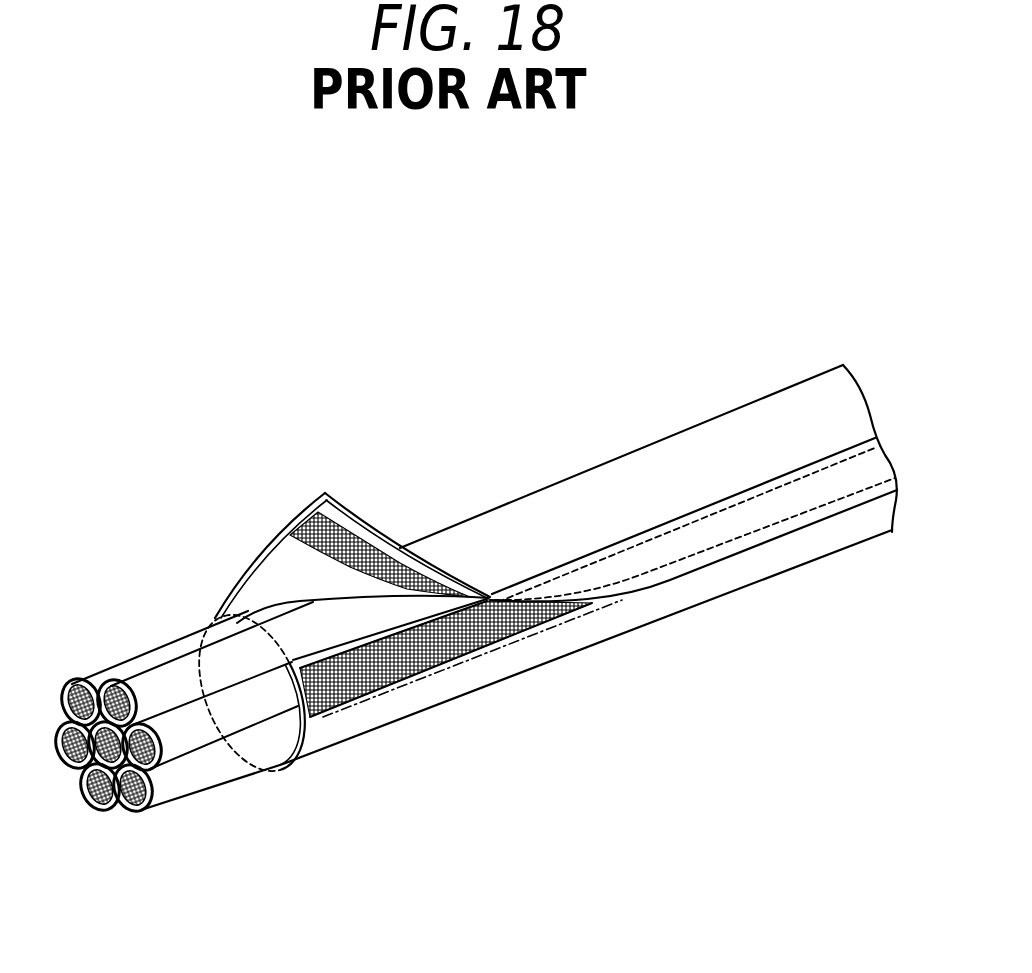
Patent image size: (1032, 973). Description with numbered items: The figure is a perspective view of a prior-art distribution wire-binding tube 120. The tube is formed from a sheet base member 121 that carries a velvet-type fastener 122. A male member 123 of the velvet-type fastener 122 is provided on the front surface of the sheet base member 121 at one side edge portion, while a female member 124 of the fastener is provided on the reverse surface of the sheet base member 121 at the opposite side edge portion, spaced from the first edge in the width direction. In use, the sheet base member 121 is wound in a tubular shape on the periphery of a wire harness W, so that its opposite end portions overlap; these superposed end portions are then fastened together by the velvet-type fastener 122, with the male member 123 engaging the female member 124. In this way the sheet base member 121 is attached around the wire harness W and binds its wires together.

The distribution wire-binding tube 120 is at (497, 496).
The sheet base member 121 is at (633, 477).
The velvet-type fastener 122 is at (500, 576).
The male member 123 is at (388, 670).
The female member 124 is at (355, 545).
The wire harness W is at (156, 633).